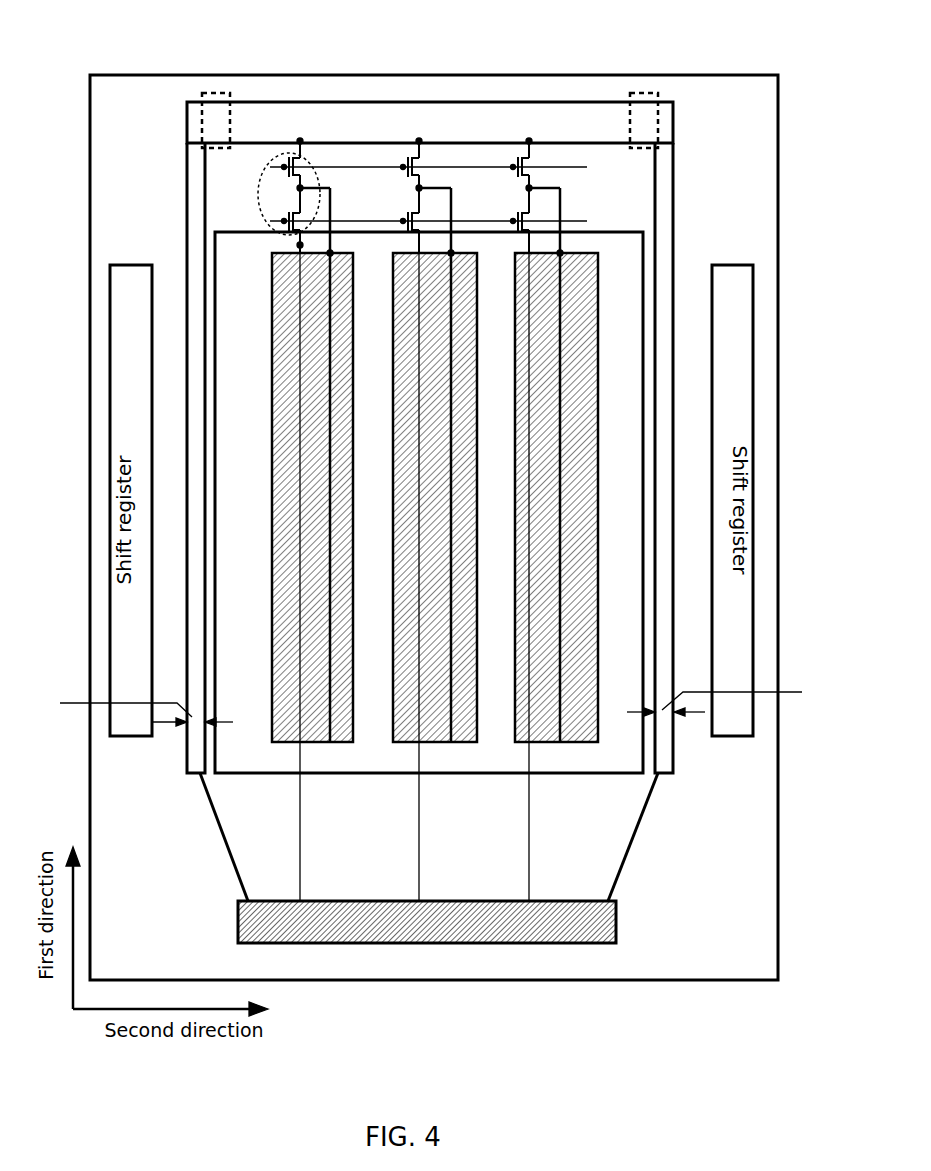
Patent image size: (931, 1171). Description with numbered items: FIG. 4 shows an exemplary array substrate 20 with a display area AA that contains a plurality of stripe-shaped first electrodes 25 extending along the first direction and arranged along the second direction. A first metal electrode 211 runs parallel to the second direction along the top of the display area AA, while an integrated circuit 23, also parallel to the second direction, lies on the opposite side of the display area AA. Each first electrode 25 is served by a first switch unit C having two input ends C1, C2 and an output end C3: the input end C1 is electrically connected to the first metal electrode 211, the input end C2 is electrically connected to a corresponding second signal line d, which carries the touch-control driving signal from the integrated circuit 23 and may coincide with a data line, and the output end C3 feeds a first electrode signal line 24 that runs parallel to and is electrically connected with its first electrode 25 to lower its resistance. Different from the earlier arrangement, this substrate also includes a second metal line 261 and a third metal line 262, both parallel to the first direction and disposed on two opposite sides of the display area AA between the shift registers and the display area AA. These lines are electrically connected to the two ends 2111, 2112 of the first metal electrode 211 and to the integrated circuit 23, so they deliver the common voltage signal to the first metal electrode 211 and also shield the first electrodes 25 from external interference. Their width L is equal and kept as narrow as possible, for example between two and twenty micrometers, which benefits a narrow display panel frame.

The array substrate 20 is at (713, 75).
The first metal electrode 211 is at (542, 102).
The end of first metal electrode 2111 is at (220, 93).
The end of first metal electrode 2112 is at (644, 93).
The second metal line 261 is at (187, 765).
The third metal line 262 is at (674, 745).
The display area AA is at (636, 215).
The integrated circuit 23 is at (558, 943).
The first electrode signal line 24 is at (330, 722).
The first electrode 25 is at (585, 742).
The second signal line d is at (290, 347).
The first switch unit C is at (270, 210).
The input end C1 is at (299, 147).
The input end C2 is at (299, 245).
The output end C3 is at (300, 190).
The width of second and third metal lines L is at (433, 704).